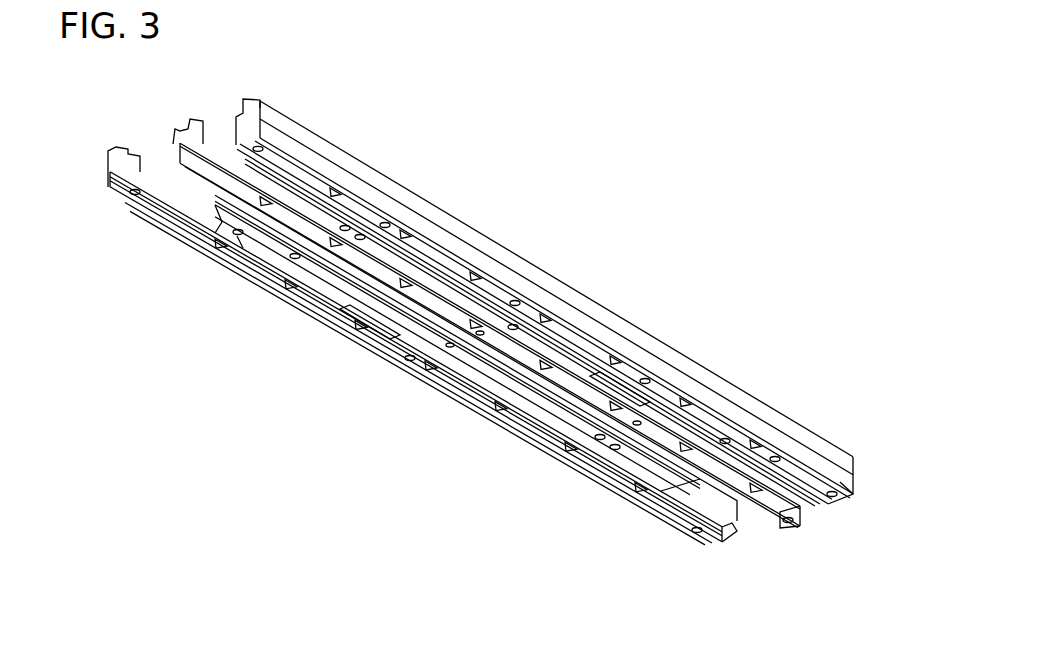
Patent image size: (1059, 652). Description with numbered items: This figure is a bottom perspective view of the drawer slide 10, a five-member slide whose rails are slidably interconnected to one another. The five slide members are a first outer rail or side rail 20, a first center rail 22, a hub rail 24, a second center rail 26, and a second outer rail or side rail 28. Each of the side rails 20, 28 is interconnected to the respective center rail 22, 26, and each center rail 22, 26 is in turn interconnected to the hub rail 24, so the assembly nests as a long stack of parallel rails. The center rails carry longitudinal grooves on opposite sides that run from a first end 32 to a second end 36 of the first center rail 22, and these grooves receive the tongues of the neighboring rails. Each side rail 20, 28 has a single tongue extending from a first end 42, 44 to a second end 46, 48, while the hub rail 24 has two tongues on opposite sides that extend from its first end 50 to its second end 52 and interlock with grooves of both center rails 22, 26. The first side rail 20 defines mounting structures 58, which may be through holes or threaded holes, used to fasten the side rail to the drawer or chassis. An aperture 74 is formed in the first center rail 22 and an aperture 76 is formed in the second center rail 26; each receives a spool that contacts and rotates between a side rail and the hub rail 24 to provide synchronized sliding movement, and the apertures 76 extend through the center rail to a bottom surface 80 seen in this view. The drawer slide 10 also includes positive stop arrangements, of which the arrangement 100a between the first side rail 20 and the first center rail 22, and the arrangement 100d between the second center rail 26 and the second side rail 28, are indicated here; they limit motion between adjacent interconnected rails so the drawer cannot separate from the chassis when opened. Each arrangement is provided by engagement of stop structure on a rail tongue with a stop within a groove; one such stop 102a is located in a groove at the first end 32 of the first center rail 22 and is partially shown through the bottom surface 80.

The drawer slide 10 is at (705, 164).
The first outer rail or side rail 20 is at (416, 358).
The first center rail 22 is at (570, 417).
The hub rail 24 is at (457, 344).
The second center rail 26 is at (490, 335).
The second outer rail or side rail 28 is at (545, 303).
The first end of the first center rail 32 is at (248, 234).
The second end of the first center rail 36 is at (654, 502).
The first end of the first side rail 42 is at (94, 184).
The first end of the second side rail 44 is at (288, 100).
The second end of the first side rail 46 is at (741, 559).
The second end of the second side rail 48 is at (861, 459).
The first end of the hub rail 50 is at (205, 91).
The second end of the hub rail 52 is at (803, 537).
The mounting structures 58 is at (397, 383).
The aperture 74 is at (253, 291).
The aperture 76 is at (547, 274).
The bottom surface 80 is at (485, 349).
The positive stop arrangement 100a is at (194, 256).
The positive stop arrangement 100d is at (755, 392).
The stop 102a is at (201, 270).